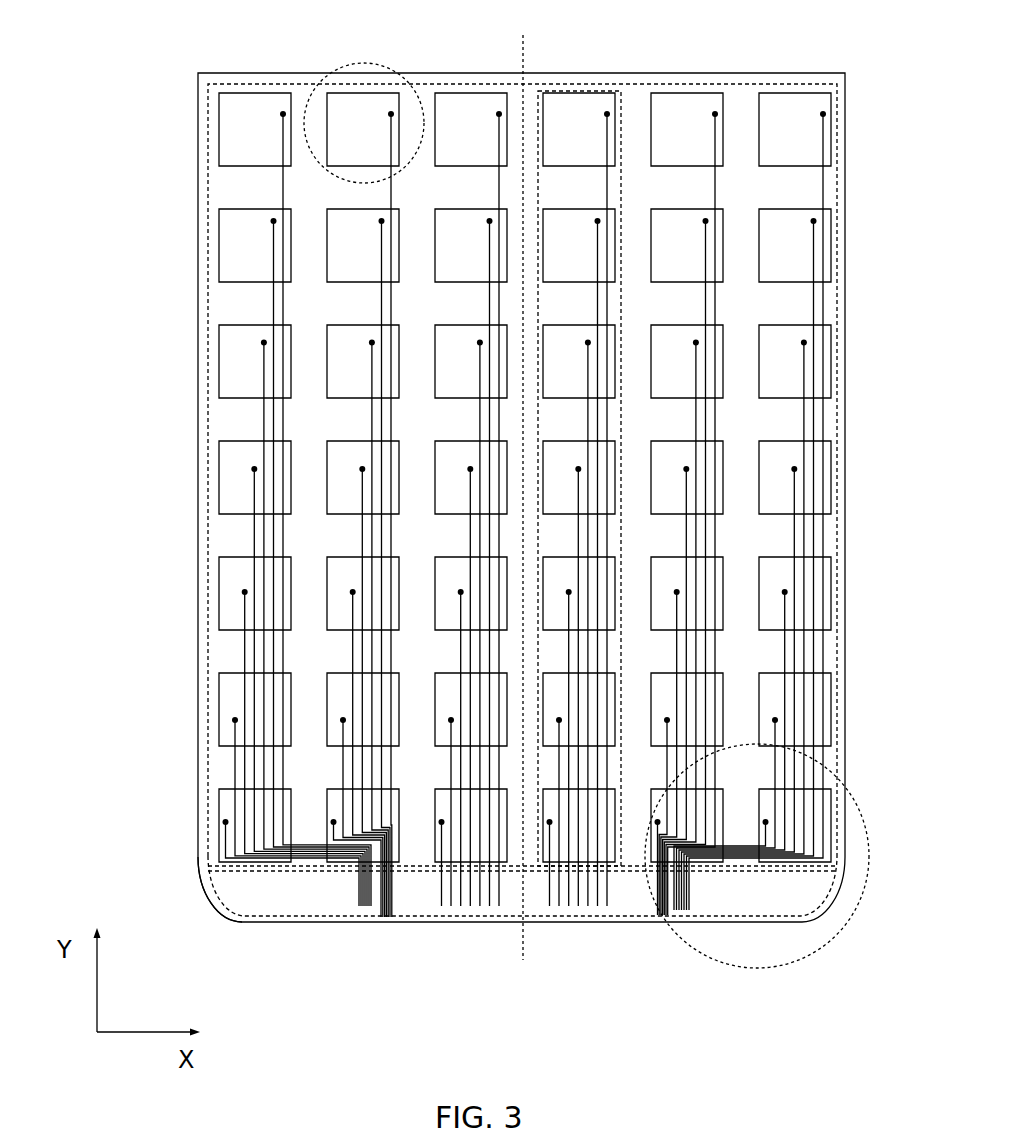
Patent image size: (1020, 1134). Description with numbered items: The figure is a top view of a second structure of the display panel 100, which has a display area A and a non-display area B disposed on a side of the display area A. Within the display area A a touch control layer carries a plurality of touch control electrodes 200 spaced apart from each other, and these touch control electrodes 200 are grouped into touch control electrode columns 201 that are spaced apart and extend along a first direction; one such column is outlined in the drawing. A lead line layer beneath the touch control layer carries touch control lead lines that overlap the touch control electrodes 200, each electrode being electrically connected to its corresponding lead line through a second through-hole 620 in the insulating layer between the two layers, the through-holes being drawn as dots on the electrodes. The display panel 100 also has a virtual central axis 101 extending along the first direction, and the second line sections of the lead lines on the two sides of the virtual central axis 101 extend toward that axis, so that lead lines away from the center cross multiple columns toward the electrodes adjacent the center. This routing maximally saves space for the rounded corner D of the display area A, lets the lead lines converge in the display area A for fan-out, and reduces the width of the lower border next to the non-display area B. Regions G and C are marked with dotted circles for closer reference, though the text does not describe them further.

The display panel 100 is at (135, 40).
The display area A is at (220, 182).
The non-display area B is at (232, 882).
The rounded corner D is at (222, 908).
The pixel unit region G is at (385, 55).
The corner region C is at (810, 957).
The virtual central axis 101 is at (520, 937).
The touch control electrode column 201 is at (622, 143).
The touch control electrode 200 is at (219, 247).
The second through-hole 620 is at (259, 341).